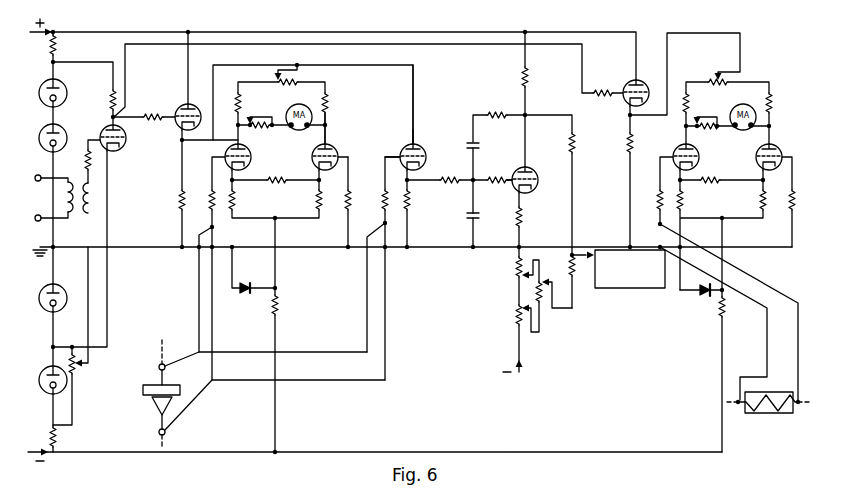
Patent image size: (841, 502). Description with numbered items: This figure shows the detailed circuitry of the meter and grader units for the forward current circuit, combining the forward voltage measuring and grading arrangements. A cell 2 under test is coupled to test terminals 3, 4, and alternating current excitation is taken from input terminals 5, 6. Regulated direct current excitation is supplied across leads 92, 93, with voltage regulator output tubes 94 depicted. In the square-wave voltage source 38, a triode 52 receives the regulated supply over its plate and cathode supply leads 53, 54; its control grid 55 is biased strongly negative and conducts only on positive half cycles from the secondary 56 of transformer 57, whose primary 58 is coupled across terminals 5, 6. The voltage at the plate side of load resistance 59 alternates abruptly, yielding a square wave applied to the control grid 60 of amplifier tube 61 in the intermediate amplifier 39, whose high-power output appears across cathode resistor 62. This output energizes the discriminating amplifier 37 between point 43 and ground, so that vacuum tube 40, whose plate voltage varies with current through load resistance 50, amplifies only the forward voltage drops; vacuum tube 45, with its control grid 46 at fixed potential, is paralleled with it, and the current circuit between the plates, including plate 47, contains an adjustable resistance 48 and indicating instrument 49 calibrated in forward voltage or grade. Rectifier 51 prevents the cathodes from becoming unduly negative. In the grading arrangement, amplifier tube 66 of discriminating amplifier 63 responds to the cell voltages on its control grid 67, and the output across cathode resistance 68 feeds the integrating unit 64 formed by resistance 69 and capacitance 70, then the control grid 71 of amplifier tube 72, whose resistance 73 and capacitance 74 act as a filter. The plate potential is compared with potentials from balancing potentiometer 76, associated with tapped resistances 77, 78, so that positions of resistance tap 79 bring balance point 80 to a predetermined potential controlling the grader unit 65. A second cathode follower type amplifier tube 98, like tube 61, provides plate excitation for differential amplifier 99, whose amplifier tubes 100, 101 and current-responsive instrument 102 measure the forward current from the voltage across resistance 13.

The cell 2 is at (151, 400).
The test terminal 3 is at (160, 366).
The test terminal 4 is at (165, 432).
The alternating current input terminal 5 is at (37, 176).
The alternating current input terminal 6 is at (36, 220).
The resistance 13 is at (760, 416).
The discriminating amplifier 37 is at (333, 28).
The square-wave voltage source 38 is at (148, 29).
The intermediate amplifier 39 is at (221, 28).
The vacuum tube 40 is at (212, 157).
The point 43 is at (298, 65).
The vacuum tube 45 is at (312, 161).
The control grid 46 is at (333, 163).
The plate 47 is at (330, 148).
The adjustable resistance 48 is at (268, 127).
The current-responsive indicating instrument 49 is at (313, 120).
The load resistance 50 is at (242, 100).
The rectifier 51 is at (257, 294).
The triode 52 is at (124, 148).
The plate supply lead 53 is at (62, 35).
The cathode supply lead 54 is at (108, 297).
The control grid 55 is at (110, 126).
The secondary 56 is at (98, 200).
The transformer 57 is at (104, 176).
The primary 58 is at (69, 218).
The load resistance 59 is at (113, 95).
The control grid 60 is at (181, 129).
The amplifier tube 61 is at (182, 105).
The cathode resistor 62 is at (182, 201).
The discriminating amplifier 63 is at (426, 113).
The integrating unit 64 is at (544, 97).
The grader unit 65 is at (625, 289).
The amplifier tube 66 is at (409, 145).
The control grid 67 is at (419, 157).
The cathode resistance 68 is at (409, 197).
The resistance 69 is at (452, 190).
The capacitance 70 is at (479, 218).
The control grid 71 is at (531, 170).
The amplifier tube 72 is at (516, 170).
The resistance 73 is at (495, 112).
The capacitance 74 is at (478, 144).
The balancing potentiometer 76 is at (540, 302).
The tapped resistance 77 is at (517, 265).
The tapped resistance 78 is at (515, 313).
The resistance tap 79 is at (548, 280).
The balance point 80 is at (578, 248).
The lead 92 is at (42, 36).
The lead 93 is at (35, 450).
The voltage regulator output tubes 94 is at (42, 129).
The cathode follower type amplifier tube 98 is at (628, 82).
The differential amplifier 99 is at (754, 70).
The amplifier tube 100 is at (677, 152).
The amplifier tube 101 is at (771, 148).
The current-responsive instrument 102 is at (738, 107).